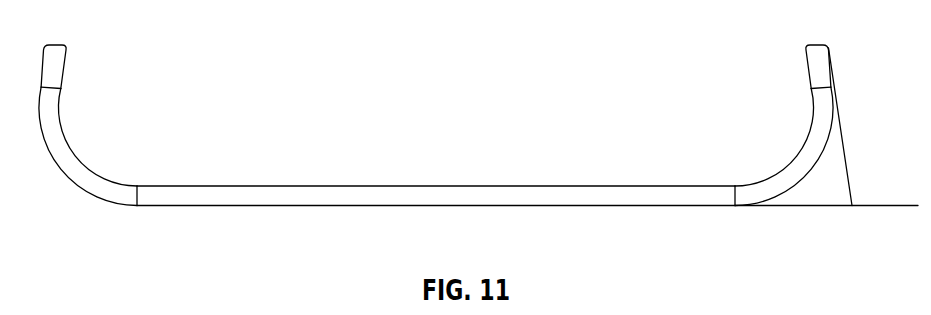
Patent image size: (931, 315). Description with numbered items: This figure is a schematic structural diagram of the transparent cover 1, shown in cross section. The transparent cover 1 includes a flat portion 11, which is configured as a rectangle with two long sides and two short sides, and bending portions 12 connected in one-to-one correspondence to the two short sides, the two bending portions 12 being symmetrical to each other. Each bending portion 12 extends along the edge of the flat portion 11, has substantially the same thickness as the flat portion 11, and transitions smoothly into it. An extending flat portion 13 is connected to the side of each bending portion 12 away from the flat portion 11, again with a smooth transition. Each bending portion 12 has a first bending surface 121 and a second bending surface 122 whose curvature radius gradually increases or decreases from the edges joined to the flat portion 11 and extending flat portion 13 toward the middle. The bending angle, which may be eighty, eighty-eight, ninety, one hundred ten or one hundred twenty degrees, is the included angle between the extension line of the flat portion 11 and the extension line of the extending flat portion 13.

The transparent cover 1 is at (413, 74).
The flat portion 11 is at (295, 192).
The bending portion 12 is at (88, 177).
The first bending surface 121 is at (77, 147).
The second bending surface 122 is at (63, 175).
The extending flat portion 13 is at (63, 63).